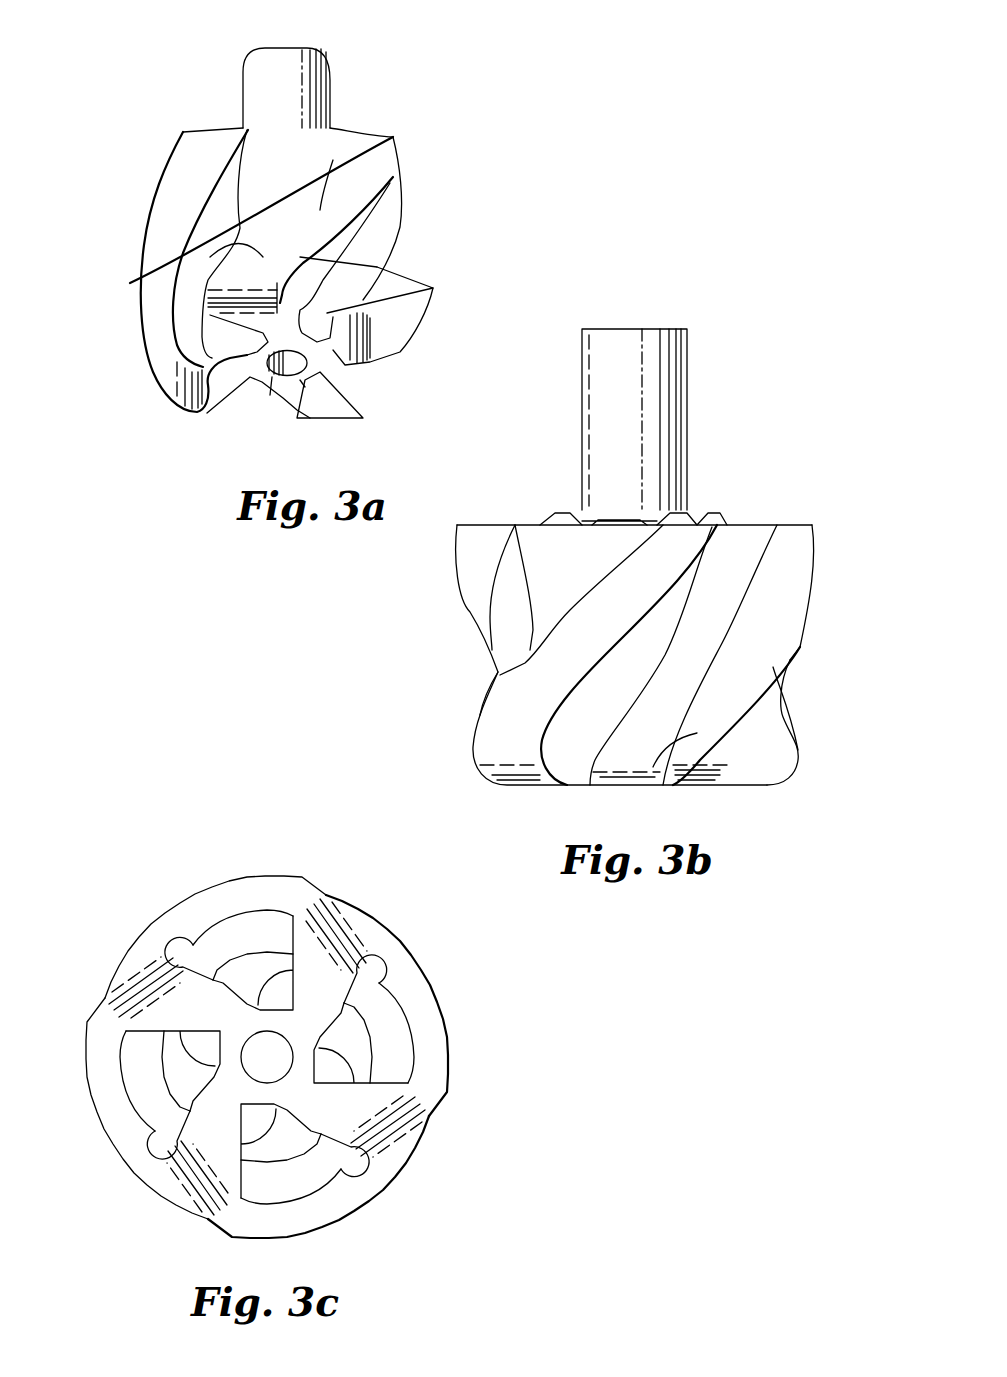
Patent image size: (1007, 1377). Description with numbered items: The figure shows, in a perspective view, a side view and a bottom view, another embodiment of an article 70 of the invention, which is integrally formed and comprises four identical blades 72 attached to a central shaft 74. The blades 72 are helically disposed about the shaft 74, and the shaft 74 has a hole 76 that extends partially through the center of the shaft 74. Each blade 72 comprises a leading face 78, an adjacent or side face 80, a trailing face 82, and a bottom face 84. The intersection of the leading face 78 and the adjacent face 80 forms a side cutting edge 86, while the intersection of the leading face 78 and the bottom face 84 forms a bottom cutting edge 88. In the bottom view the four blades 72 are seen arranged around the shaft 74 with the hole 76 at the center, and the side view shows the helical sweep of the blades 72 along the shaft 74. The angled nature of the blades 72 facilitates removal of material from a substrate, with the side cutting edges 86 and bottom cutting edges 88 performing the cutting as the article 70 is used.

In FIG. 3A, the article 70 is at (416, 91).
In FIG. 3B, the article 70 is at (766, 379).
In FIG. 3A, the blade 72 is at (396, 164).
In FIG. 3B, the blade 72 is at (803, 575).
In FIG. 3C, the blade 72 is at (281, 1079).
In FIG. 3A, the central shaft 74 is at (270, 62).
In FIG. 3B, the central shaft 74 is at (620, 340).
In FIG. 3C, the central shaft 74 is at (267, 1015).
In FIG. 3A, the hole 76 is at (295, 368).
In FIG. 3C, the hole 76 is at (370, 1043).
In FIG. 3A, the leading face 78 is at (407, 283).
In FIG. 3B, the leading face 78 is at (770, 640).
In FIG. 3A, the adjacent face 80 is at (163, 188).
In FIG. 3B, the adjacent face 80 is at (547, 680).
In FIG. 3C, the adjacent face 80 is at (267, 1091).
In FIG. 3A, the trailing face 82 is at (335, 247).
In FIG. 3A, the bottom face 84 is at (347, 373).
In FIG. 3A, the side cutting edge 86 is at (333, 160).
In FIG. 3B, the side cutting edge 86 is at (743, 710).
In FIG. 3C, the side cutting edge 86 is at (273, 1057).
In FIG. 3A, the bottom cutting edge 88 is at (330, 358).